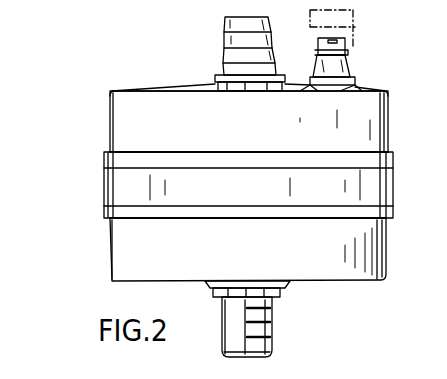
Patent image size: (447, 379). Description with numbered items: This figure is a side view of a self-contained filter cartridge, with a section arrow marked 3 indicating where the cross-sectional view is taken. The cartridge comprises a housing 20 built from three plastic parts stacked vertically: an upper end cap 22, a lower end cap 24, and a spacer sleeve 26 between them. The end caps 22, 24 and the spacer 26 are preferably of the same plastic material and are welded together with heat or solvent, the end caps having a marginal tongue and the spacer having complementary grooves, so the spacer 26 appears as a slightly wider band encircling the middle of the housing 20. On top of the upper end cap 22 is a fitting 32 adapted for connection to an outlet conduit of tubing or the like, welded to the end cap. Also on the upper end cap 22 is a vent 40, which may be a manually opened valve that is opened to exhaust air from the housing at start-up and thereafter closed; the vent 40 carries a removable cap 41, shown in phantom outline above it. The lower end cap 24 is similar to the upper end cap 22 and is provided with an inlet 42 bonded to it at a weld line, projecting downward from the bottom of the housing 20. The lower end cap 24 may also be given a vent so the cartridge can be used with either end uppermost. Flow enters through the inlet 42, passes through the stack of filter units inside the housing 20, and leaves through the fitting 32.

The section line for FIG. 3 is at (4, 113).
The housing 20 is at (87, 189).
The upper end cap 22 is at (229, 134).
The lower end cap 24 is at (223, 257).
The spacer sleeve 26 is at (229, 195).
The fitting 32 is at (227, 51).
The vent 40 is at (345, 66).
The removable cap 41 is at (355, 27).
The inlet 42 is at (272, 325).